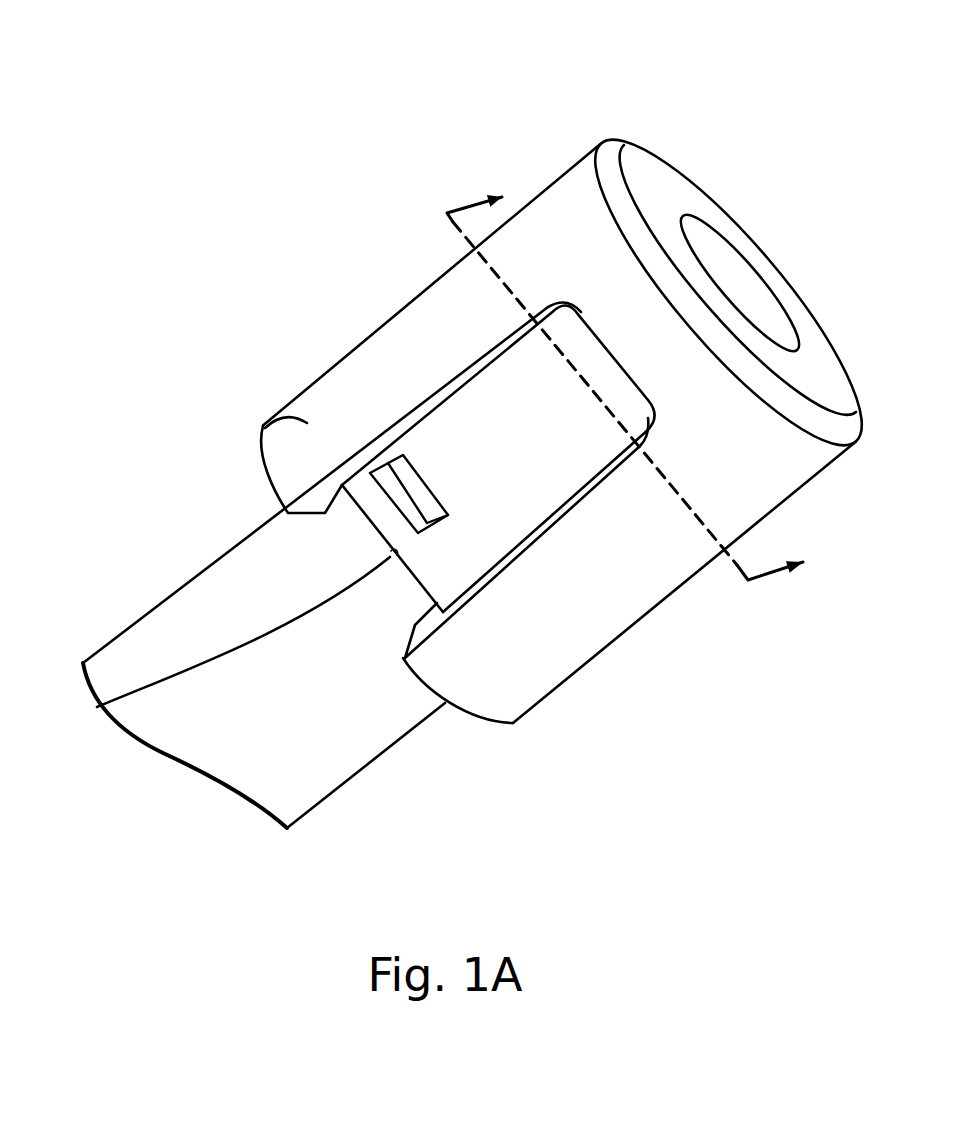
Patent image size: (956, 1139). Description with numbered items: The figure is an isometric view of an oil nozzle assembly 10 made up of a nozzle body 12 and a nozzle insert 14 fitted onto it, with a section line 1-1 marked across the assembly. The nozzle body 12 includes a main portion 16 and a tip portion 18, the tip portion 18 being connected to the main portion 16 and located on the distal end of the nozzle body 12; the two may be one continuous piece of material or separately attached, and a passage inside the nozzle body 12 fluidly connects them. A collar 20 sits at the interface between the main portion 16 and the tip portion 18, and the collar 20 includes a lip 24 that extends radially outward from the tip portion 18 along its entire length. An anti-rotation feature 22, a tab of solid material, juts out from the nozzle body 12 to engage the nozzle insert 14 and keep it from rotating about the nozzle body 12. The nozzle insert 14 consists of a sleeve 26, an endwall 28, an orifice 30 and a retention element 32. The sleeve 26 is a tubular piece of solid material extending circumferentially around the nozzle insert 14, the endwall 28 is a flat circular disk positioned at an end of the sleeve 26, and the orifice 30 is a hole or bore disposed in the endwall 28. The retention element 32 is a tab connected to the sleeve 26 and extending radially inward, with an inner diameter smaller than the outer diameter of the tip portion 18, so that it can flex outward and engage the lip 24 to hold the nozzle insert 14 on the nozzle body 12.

The oil nozzle assembly 10 is at (308, 152).
The nozzle body 12 is at (327, 800).
The nozzle insert 14 is at (640, 623).
The main portion 16 is at (50, 625).
The tip portion 18 is at (545, 76).
The collar 20 is at (413, 587).
The anti-rotation feature 22 is at (386, 477).
The lip 24 is at (98, 697).
The sleeve 26 is at (560, 182).
The endwall 28 is at (655, 185).
The orifice 30 is at (735, 279).
The retention element 32 is at (340, 503).
The section line 1-1 is at (773, 578).